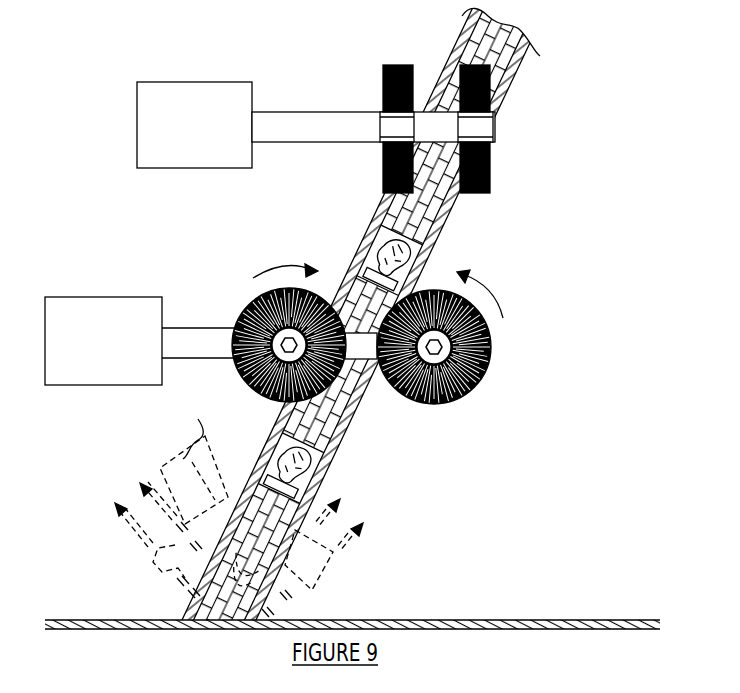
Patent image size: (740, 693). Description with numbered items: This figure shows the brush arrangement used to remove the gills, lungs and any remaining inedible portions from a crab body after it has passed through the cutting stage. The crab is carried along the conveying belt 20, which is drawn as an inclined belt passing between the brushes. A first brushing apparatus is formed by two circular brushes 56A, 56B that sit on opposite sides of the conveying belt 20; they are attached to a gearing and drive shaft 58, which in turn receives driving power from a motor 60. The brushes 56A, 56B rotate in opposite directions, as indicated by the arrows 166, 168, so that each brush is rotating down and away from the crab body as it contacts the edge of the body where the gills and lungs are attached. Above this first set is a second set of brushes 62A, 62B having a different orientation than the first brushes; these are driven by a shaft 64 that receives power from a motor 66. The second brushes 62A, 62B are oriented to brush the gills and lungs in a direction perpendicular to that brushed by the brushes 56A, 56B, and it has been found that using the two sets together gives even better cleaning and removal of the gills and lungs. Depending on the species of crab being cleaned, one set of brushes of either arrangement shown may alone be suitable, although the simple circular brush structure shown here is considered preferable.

The conveying belt 20 is at (320, 455).
The brush 56A is at (262, 398).
The brush 56B is at (423, 402).
The gearing and drive shaft 58 is at (173, 330).
The motor 60 is at (117, 303).
The brush 62A is at (402, 63).
The brush 62B is at (476, 195).
The shaft 64 is at (330, 115).
The motor 66 is at (213, 86).
The arrow 166 is at (273, 265).
The arrow 168 is at (493, 300).